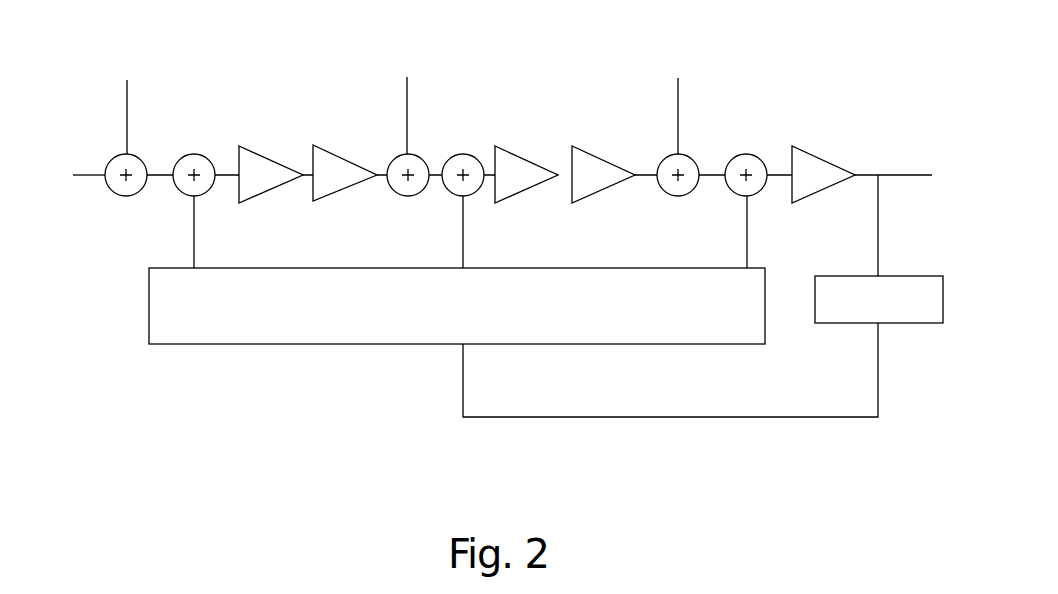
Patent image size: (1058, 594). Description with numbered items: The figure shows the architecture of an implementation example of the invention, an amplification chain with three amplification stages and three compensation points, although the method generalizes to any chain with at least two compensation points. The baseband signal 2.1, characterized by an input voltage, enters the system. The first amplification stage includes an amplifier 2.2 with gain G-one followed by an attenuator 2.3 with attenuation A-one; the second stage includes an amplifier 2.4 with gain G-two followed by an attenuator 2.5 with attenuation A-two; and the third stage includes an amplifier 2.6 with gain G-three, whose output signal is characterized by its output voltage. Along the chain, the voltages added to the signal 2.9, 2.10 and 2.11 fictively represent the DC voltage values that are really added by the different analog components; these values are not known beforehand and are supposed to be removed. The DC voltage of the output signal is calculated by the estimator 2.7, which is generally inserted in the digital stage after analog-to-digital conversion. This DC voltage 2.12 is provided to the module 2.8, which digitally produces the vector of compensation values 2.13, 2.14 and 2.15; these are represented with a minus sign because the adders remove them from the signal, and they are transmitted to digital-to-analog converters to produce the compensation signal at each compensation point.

The baseband signal 2.1 is at (82, 172).
The amplifier 2.2 is at (271, 158).
The attenuator 2.3 is at (351, 158).
The amplifier 2.4 is at (534, 160).
The attenuator 2.5 is at (606, 160).
The amplifier 2.6 is at (818, 157).
The estimator 2.7 is at (828, 275).
The module producing vector of compensation values 2.8 is at (353, 267).
The DC voltage added to the signal 2.9 is at (128, 92).
The DC voltage added to the signal 2.10 is at (409, 92).
The DC voltage added to the signal 2.11 is at (680, 92).
The DC voltage 2.12 is at (627, 418).
The compensation value 2.13 is at (195, 236).
The compensation value 2.14 is at (465, 241).
The compensation value 2.15 is at (747, 211).